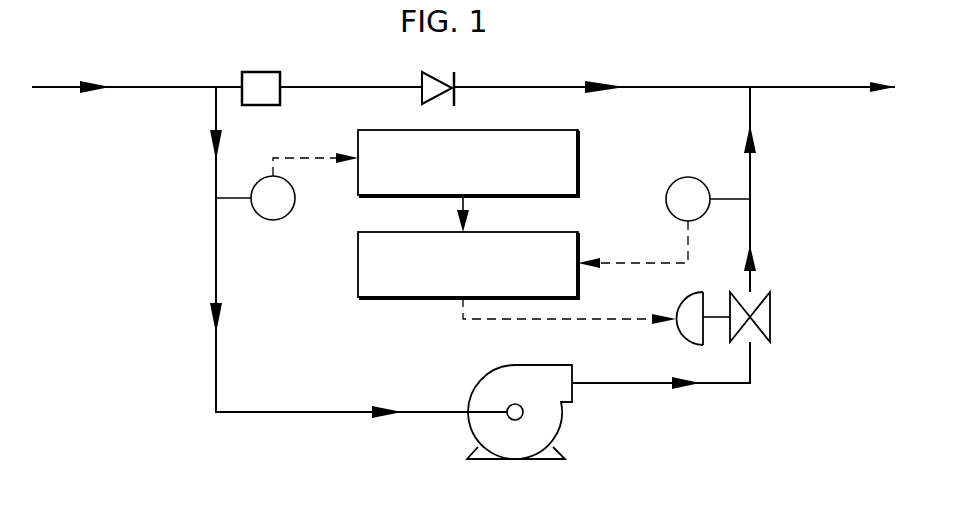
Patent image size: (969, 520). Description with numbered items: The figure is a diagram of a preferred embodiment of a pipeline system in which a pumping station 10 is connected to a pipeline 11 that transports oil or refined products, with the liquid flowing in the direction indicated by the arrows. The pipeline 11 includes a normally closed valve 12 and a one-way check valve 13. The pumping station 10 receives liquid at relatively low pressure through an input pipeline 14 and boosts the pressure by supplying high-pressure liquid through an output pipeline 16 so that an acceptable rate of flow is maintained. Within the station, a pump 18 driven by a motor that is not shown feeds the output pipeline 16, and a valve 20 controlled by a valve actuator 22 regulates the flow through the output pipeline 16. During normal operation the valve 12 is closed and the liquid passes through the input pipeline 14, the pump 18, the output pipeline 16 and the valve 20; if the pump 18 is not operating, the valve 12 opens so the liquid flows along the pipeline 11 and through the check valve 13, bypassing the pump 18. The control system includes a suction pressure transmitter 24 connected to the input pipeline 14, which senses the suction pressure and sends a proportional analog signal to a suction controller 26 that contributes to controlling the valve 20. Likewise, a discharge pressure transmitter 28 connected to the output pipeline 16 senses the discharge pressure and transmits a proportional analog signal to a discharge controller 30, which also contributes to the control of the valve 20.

The pumping station 10 is at (155, 366).
The pipeline 11 is at (140, 87).
The normally closed valve 12 is at (280, 72).
The one-way check valve 13 is at (433, 72).
The input pipeline 14 is at (215, 283).
The output pipeline 16 is at (750, 372).
The pump 18 is at (558, 426).
The valve 20 is at (772, 325).
The valve actuator 22 is at (682, 333).
The suction pressure transmitter 24 is at (278, 220).
The suction controller 26 is at (580, 148).
The discharge pressure transmitter 28 is at (669, 185).
The discharge controller 30 is at (357, 280).